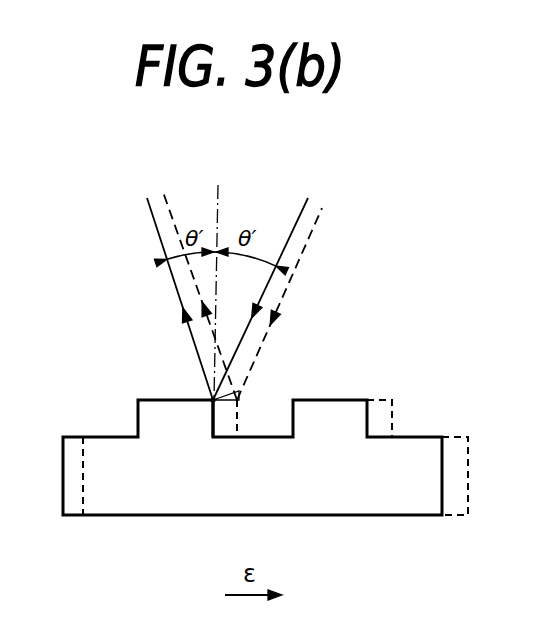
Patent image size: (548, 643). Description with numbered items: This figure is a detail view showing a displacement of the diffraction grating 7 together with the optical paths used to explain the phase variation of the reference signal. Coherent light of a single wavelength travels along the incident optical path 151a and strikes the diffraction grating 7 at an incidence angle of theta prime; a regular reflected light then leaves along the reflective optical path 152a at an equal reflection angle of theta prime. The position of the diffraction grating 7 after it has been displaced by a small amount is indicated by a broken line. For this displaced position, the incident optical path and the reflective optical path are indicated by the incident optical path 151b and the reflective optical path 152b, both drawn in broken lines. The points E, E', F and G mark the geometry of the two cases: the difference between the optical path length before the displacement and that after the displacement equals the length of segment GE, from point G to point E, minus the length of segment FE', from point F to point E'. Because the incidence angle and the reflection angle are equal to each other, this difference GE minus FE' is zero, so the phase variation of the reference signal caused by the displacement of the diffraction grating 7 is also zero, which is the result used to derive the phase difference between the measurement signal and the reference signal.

The diffraction grating 7 is at (418, 437).
The optical path 151a is at (303, 198).
The incident optical path 151b is at (316, 226).
The optical path 152a is at (150, 229).
The reflective optical path 152b is at (162, 192).
The point E is at (201, 418).
The point E' is at (249, 418).
The point F is at (237, 388).
The point G is at (208, 398).